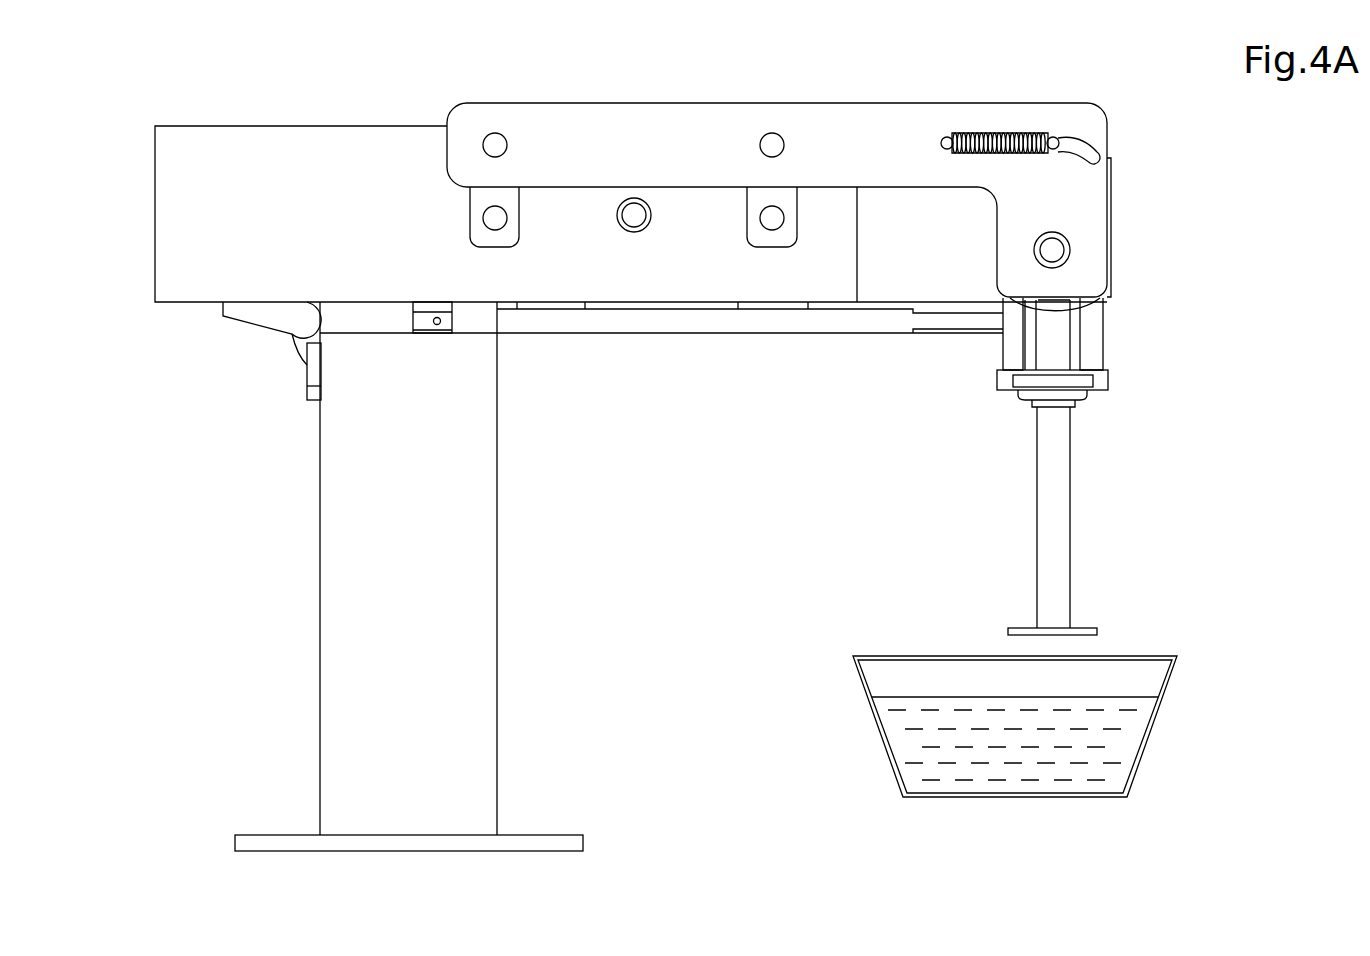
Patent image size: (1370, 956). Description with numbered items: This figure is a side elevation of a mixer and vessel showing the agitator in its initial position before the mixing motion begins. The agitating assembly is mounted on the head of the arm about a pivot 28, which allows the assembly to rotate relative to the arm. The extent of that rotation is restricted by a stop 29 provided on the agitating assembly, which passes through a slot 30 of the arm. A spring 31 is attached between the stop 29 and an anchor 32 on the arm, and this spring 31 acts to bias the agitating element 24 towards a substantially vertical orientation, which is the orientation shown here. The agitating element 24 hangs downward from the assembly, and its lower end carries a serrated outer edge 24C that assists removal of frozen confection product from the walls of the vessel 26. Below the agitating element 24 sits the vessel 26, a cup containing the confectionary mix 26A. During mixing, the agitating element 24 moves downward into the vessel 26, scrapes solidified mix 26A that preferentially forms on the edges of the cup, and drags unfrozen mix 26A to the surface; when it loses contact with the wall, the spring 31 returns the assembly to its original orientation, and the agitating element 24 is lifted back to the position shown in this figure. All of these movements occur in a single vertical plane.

The agitating element 24 is at (1070, 500).
The serrated outer edge 24C is at (1098, 631).
The vessel 26 is at (1176, 667).
The confectionary mix 26A is at (1120, 737).
The pivot 28 is at (1064, 250).
The stop 29 is at (1059, 138).
The slot 30 is at (1093, 151).
The spring 31 is at (1003, 133).
The anchor 32 is at (950, 136).